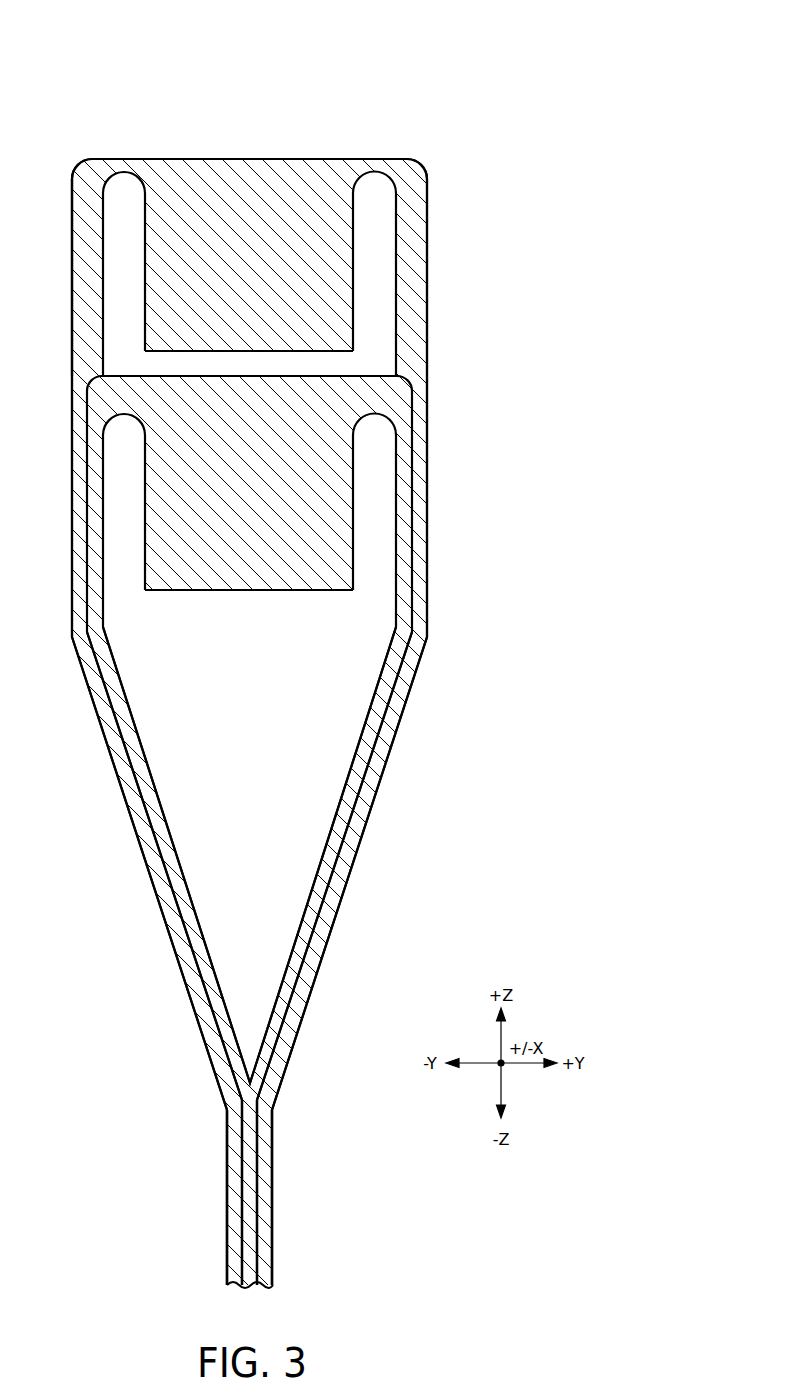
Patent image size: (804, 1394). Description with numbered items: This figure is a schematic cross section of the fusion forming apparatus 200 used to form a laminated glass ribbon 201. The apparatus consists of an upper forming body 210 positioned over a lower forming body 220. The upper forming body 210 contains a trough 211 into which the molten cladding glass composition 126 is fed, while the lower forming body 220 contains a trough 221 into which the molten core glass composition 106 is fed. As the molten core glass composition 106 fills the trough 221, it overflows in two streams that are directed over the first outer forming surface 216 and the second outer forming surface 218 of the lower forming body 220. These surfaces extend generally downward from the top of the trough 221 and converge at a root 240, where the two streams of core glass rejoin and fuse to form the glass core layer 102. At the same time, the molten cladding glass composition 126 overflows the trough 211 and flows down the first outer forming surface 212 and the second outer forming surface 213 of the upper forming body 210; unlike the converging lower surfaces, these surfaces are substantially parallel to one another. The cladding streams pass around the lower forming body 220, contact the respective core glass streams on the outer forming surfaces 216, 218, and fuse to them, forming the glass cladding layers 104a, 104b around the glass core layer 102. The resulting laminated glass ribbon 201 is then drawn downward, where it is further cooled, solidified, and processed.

The fusion forming apparatus 200 is at (540, 95).
The upper forming body 210 is at (432, 160).
The molten cladding glass composition 126 is at (306, 152).
The trough 211 is at (145, 268).
The first outer forming surface 212 is at (397, 276).
The second outer forming surface 213 is at (100, 318).
The molten core glass composition 106 is at (150, 438).
The lower forming body 220 is at (466, 408).
The trough 221 is at (145, 562).
The first outer forming surface 216 is at (150, 786).
The second outer forming surface 218 is at (350, 787).
The root 240 is at (250, 1084).
The glass core layer 102 is at (242, 1165).
The glass cladding layer 104a is at (227, 1232).
The glass cladding layer 104b is at (273, 1232).
The laminated glass ribbon 201 is at (203, 1265).